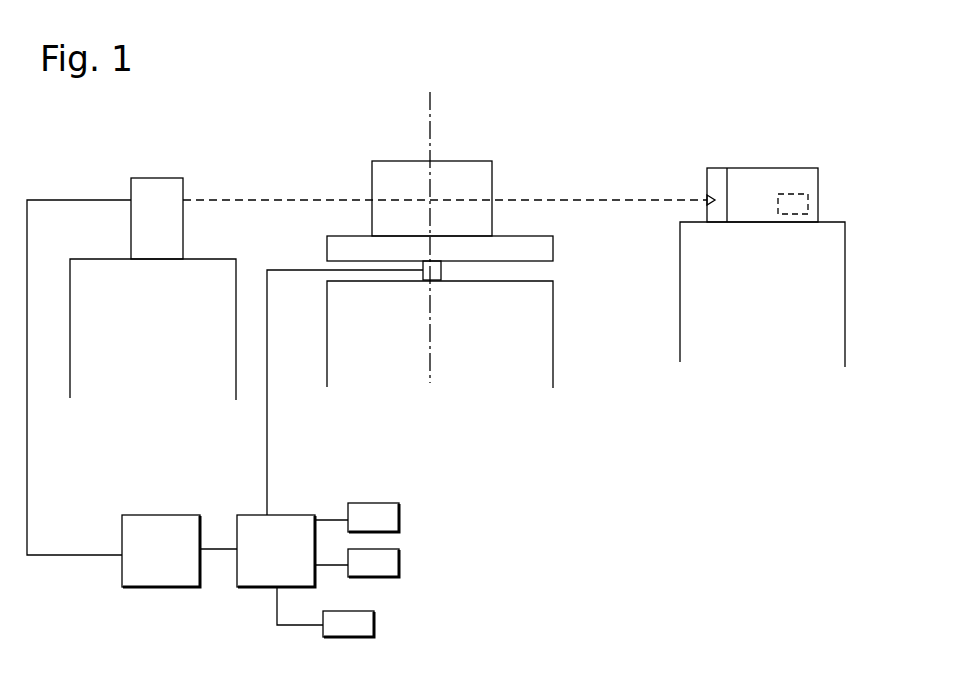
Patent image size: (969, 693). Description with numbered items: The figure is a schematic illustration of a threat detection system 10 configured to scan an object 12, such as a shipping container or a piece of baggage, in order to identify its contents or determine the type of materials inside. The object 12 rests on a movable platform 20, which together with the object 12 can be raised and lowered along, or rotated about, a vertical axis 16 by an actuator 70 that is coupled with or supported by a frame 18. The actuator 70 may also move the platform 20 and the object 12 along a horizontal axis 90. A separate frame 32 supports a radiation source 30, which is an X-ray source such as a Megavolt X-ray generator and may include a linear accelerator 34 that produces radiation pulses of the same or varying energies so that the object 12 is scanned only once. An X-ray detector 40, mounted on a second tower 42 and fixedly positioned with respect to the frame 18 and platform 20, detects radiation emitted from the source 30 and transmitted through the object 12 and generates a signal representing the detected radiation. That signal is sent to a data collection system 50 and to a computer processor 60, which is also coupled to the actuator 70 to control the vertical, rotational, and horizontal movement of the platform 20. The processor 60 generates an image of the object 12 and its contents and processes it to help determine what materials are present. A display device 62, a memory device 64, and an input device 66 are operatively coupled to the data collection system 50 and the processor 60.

The threat detection system 10 is at (623, 148).
The object 12 is at (492, 167).
The vertical axis 16 is at (430, 118).
The frame 18 is at (553, 339).
The movable platform 20 is at (553, 247).
The radiation source 30 is at (778, 168).
The frame 32 is at (845, 328).
The linear accelerator 34 is at (815, 198).
The X-ray detector 40 is at (183, 186).
The second tower 42 is at (90, 258).
The data collection system 50 is at (153, 515).
The computer processor 60 is at (290, 515).
The display device 62 is at (388, 503).
The memory device 64 is at (385, 549).
The input device 66 is at (352, 611).
The actuator 70 is at (441, 271).
The horizontal axis 90 is at (620, 198).